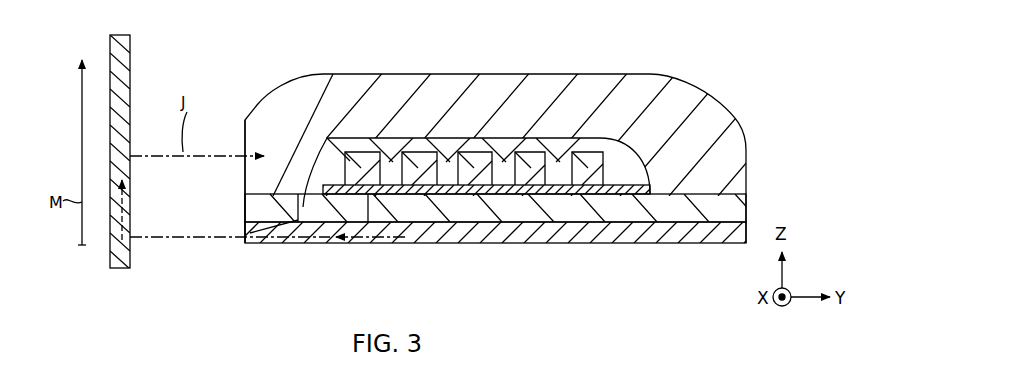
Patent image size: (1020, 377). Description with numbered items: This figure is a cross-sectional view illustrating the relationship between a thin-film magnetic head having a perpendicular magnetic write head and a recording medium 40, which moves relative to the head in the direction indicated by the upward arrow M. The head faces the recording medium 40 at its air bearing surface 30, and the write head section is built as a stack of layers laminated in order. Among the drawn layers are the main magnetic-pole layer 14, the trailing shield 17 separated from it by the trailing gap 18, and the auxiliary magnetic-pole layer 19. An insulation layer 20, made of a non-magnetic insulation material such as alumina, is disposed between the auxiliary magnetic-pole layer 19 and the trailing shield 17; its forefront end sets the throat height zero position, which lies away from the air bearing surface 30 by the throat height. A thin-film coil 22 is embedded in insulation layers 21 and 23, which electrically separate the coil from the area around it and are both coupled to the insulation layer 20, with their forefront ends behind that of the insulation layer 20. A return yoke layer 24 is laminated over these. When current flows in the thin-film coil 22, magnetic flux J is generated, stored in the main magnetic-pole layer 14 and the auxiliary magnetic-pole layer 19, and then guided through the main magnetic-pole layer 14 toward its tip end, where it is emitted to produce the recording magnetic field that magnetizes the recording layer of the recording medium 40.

The main magnetic-pole layer 14 is at (525, 230).
The trailing shield 17 is at (270, 202).
The trailing gap 18 is at (362, 180).
The auxiliary magnetic-pole layer 19 is at (402, 160).
The insulation layer 20 is at (327, 138).
The insulation layer 21 is at (588, 160).
The thin-film coil 22 is at (488, 152).
The insulation layer 23 is at (458, 162).
The return yoke layer 24 is at (652, 97).
The air bearing surface 30 is at (244, 203).
The recording medium 40 is at (118, 268).